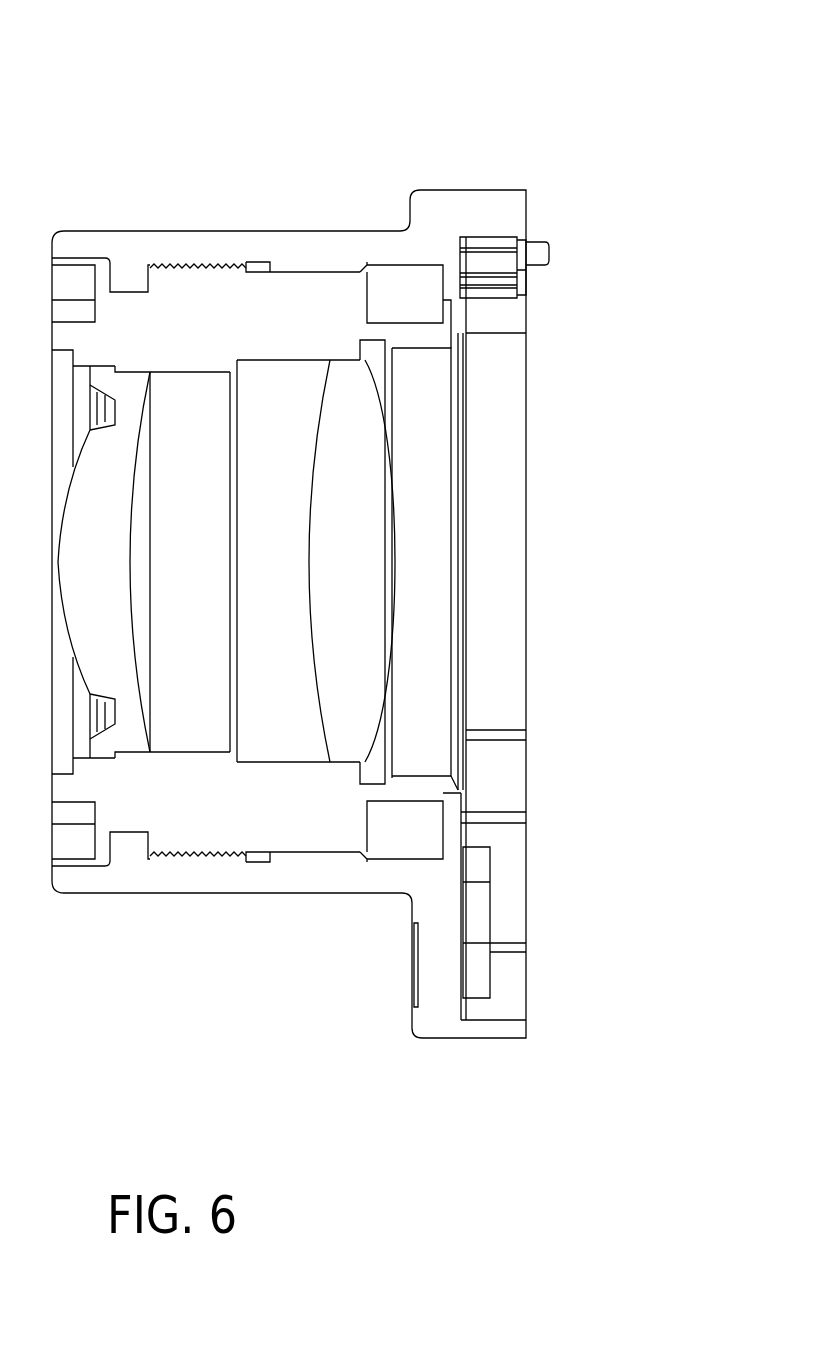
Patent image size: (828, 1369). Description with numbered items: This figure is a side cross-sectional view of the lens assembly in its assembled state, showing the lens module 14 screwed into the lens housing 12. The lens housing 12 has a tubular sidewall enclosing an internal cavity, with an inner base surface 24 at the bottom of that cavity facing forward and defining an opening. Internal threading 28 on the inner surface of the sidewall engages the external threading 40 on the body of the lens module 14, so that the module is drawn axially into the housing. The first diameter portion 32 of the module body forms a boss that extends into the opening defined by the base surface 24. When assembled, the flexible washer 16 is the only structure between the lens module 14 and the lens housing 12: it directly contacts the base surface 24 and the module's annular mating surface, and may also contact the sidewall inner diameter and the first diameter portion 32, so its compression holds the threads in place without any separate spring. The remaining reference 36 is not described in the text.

The lens housing 12 is at (463, 188).
The lens module 14 is at (188, 320).
The flexible washer 16 is at (388, 290).
The inner base surface 24 is at (413, 293).
The internal threading 28 is at (197, 263).
The first diameter portion 32 is at (442, 783).
The lower shoulder 36 is at (365, 830).
The external threading 40 is at (193, 852).